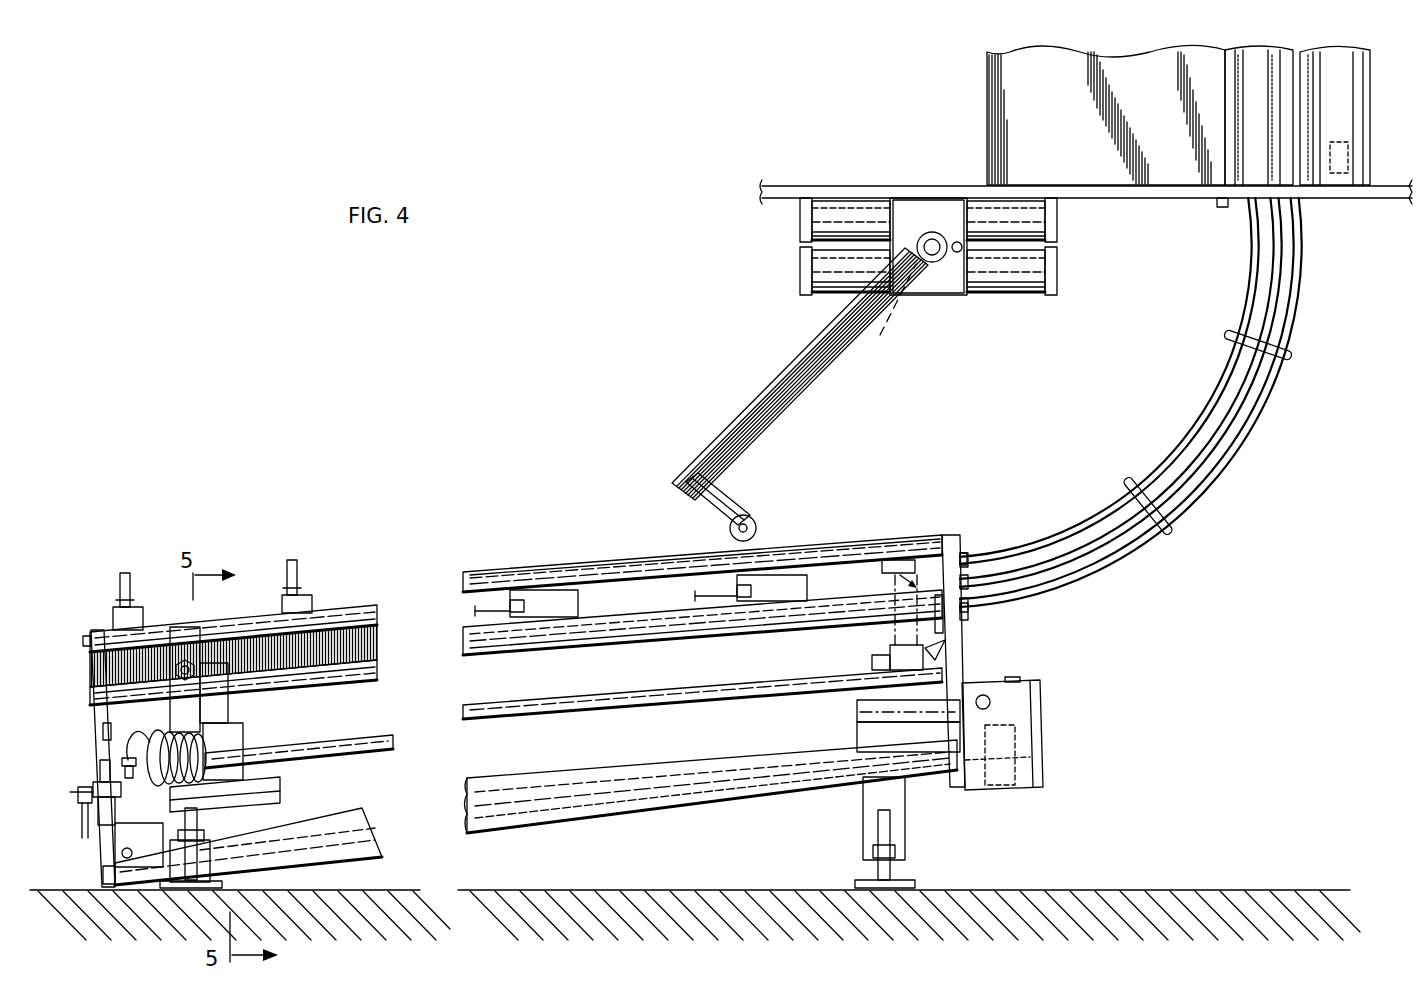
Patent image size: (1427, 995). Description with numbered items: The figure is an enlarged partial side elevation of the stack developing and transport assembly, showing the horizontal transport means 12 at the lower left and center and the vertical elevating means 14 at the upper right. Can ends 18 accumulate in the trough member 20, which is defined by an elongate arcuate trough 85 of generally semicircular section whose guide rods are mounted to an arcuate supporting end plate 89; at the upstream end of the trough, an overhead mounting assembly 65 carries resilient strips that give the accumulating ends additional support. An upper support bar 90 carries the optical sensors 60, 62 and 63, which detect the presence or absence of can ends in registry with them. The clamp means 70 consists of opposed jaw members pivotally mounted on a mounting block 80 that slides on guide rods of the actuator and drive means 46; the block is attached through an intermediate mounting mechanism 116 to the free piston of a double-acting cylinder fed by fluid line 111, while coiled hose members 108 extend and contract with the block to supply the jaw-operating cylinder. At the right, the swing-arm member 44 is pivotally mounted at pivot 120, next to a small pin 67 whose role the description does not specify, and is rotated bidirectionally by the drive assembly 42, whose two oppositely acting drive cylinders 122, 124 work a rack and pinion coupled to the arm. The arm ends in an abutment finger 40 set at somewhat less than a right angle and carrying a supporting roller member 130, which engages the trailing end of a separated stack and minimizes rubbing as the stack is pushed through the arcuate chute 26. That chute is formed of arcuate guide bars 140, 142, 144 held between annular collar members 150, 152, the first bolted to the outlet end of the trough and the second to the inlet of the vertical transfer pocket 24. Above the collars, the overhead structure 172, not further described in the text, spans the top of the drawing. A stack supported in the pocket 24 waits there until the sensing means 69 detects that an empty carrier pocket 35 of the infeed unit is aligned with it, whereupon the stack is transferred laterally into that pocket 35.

The horizontal transport means 12 is at (948, 652).
The vertical elevating means 14 is at (758, 324).
The can ends 18 is at (332, 630).
The trough member 20 is at (796, 812).
The transfer pocket 24 is at (1250, 63).
The arcuate chute 26 is at (1283, 402).
The carrier pocket 35 is at (1345, 78).
The abutment finger 40 is at (718, 490).
The drive assembly 42 is at (790, 220).
The swing-arm member 44 is at (806, 373).
The actuator and drive means 46 is at (300, 768).
The sensor 60 is at (806, 584).
The sensor 62 is at (578, 605).
The sensor 63 is at (899, 560).
The overhead mounting assembly 65 is at (891, 313).
The locating pin 67 is at (962, 250).
The sensing means 69 is at (1350, 160).
The clamp means 70 is at (890, 636).
The mounting block 80 is at (865, 690).
The arcuate trough 85 is at (680, 632).
The supporting end plate 89 is at (90, 706).
The upper support bar 90 is at (598, 568).
The coiled hose members 108 is at (172, 740).
The fluid line 111 is at (988, 695).
The intermediate mounting mechanism 116 is at (860, 722).
The pivot 120 is at (932, 264).
The drive cylinder 122 is at (1060, 215).
The drive cylinder 124 is at (1060, 262).
The supporting roller member 130 is at (758, 520).
The arcuate guide bar 140 is at (1300, 290).
The arcuate guide bar 142 is at (1232, 302).
The arcuate guide bar 144 is at (1283, 244).
The annular collar member 150 is at (955, 538).
The annular collar member 152 is at (1306, 193).
The overhead rail body 172 is at (1092, 148).